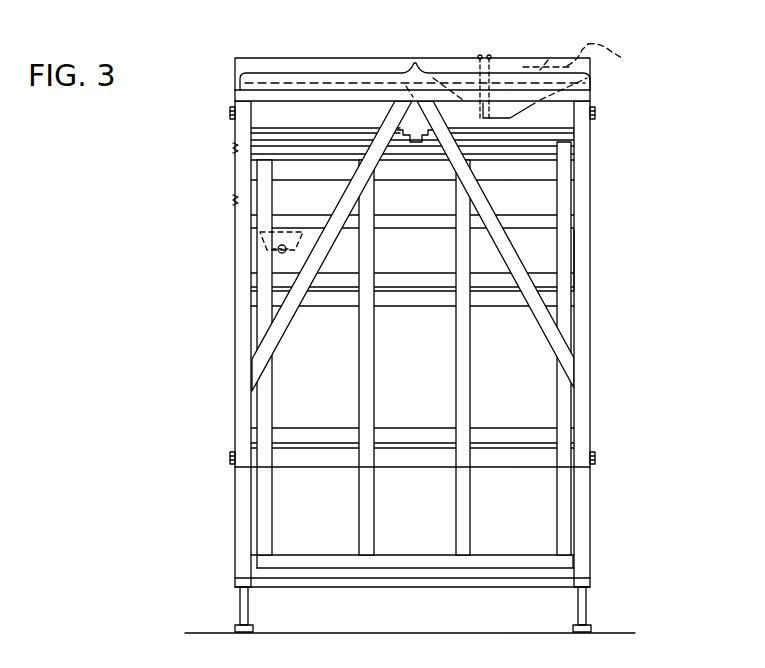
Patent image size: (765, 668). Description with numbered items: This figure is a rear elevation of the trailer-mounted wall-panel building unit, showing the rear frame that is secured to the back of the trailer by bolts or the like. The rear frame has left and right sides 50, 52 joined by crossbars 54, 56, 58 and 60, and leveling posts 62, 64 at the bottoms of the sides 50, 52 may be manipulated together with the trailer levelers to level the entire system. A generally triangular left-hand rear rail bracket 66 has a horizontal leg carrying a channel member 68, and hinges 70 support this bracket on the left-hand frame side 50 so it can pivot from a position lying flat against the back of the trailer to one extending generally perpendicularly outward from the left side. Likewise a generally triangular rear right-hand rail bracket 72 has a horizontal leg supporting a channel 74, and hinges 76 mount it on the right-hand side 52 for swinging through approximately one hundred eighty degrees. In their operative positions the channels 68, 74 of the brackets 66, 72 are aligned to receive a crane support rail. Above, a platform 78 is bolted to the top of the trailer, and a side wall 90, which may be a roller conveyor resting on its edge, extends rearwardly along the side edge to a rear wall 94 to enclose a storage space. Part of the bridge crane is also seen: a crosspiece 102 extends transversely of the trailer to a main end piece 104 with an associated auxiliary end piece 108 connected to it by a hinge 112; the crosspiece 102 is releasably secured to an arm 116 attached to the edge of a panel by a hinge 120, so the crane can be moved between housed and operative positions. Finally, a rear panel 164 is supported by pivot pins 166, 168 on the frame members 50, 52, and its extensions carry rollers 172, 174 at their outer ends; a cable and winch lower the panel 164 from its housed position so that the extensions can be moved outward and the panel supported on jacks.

The side 50 is at (247, 485).
The side 52 is at (583, 493).
The crossbar 54 is at (387, 222).
The crossbar 56 is at (423, 301).
The crossbar 58 is at (388, 458).
The crossbar 60 is at (418, 583).
The leveling post 62 is at (242, 607).
The leveling post 64 is at (590, 607).
The left-hand rear rail bracket 66 is at (328, 237).
The channel member 68 is at (284, 76).
The hinges 70 is at (230, 113).
The rear right-hand rail bracket 72 is at (548, 333).
The channel 74 is at (590, 82).
The hinges 76 is at (596, 113).
The platform 78 is at (543, 190).
The side wall 90 is at (245, 168).
The rear wall 94 is at (534, 165).
The crosspiece 102 is at (620, 56).
The main end piece 104 is at (507, 67).
The auxiliary end piece 108 is at (432, 65).
The hinge 112 is at (480, 56).
The arm 116 is at (596, 44).
The hinge 120 is at (490, 56).
The rear panel 164 is at (576, 255).
The pivot pin 166 is at (257, 560).
The pivot pin 168 is at (574, 560).
The roller 172 is at (321, 128).
The roller 174 is at (520, 128).